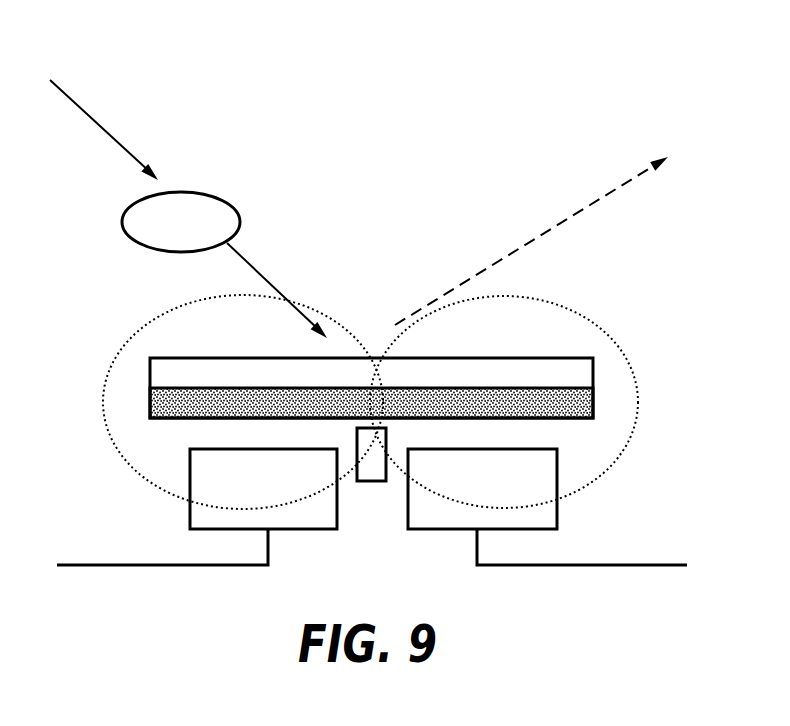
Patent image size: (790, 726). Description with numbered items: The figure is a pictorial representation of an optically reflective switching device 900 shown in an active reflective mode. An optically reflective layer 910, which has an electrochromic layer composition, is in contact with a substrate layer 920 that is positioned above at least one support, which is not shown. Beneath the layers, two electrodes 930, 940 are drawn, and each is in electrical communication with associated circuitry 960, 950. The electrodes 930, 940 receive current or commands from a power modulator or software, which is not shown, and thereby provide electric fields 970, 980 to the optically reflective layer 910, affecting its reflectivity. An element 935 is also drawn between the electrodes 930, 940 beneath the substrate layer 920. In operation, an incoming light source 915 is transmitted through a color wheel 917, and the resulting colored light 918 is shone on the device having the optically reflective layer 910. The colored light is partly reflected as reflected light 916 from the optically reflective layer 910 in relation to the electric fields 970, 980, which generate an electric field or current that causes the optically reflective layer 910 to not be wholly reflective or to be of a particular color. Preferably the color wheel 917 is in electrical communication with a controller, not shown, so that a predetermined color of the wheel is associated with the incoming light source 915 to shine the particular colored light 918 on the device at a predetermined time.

The optically reflective switching device 900 is at (506, 87).
The optically reflective layer 910 is at (582, 372).
The incoming light source 915 is at (112, 138).
The reflected light 916 is at (598, 200).
The color wheel 917 is at (148, 247).
The colored light 918 is at (248, 263).
The substrate layer 920 is at (593, 407).
The electrode 930 is at (285, 531).
The sensor element 935 is at (366, 483).
The electrode 940 is at (460, 532).
The associated circuitry 950 is at (595, 567).
The associated circuitry 960 is at (155, 567).
The electric field 970 is at (158, 487).
The electric field 980 is at (588, 485).